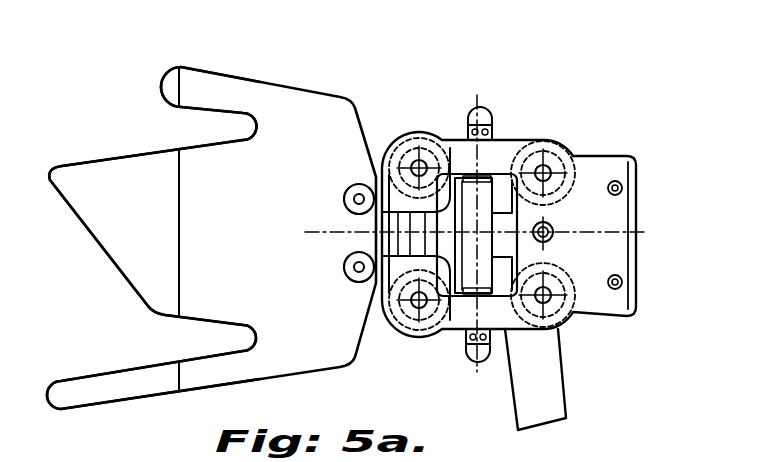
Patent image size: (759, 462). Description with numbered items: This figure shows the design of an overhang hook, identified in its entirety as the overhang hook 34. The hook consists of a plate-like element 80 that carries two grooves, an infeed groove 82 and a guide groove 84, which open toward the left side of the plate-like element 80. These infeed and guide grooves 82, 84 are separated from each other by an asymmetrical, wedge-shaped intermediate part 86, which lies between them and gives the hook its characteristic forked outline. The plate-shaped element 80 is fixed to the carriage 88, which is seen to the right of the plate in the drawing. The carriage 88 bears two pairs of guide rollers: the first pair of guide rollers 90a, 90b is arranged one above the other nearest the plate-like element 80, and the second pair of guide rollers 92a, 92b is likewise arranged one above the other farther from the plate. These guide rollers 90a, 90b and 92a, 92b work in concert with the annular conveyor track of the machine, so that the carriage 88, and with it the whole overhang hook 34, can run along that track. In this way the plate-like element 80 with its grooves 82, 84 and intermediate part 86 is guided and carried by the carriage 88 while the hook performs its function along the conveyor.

The overhang hook 34 is at (388, 97).
The plate-like element 80 is at (300, 107).
The infeed groove 82 is at (200, 112).
The guide groove 84 is at (203, 348).
The wedge-shaped intermediate part 86 is at (115, 168).
The carriage 88 is at (513, 120).
The guide roller 90a is at (413, 130).
The guide roller 90b is at (408, 327).
The guide roller 92a is at (555, 140).
The guide roller 92b is at (567, 320).